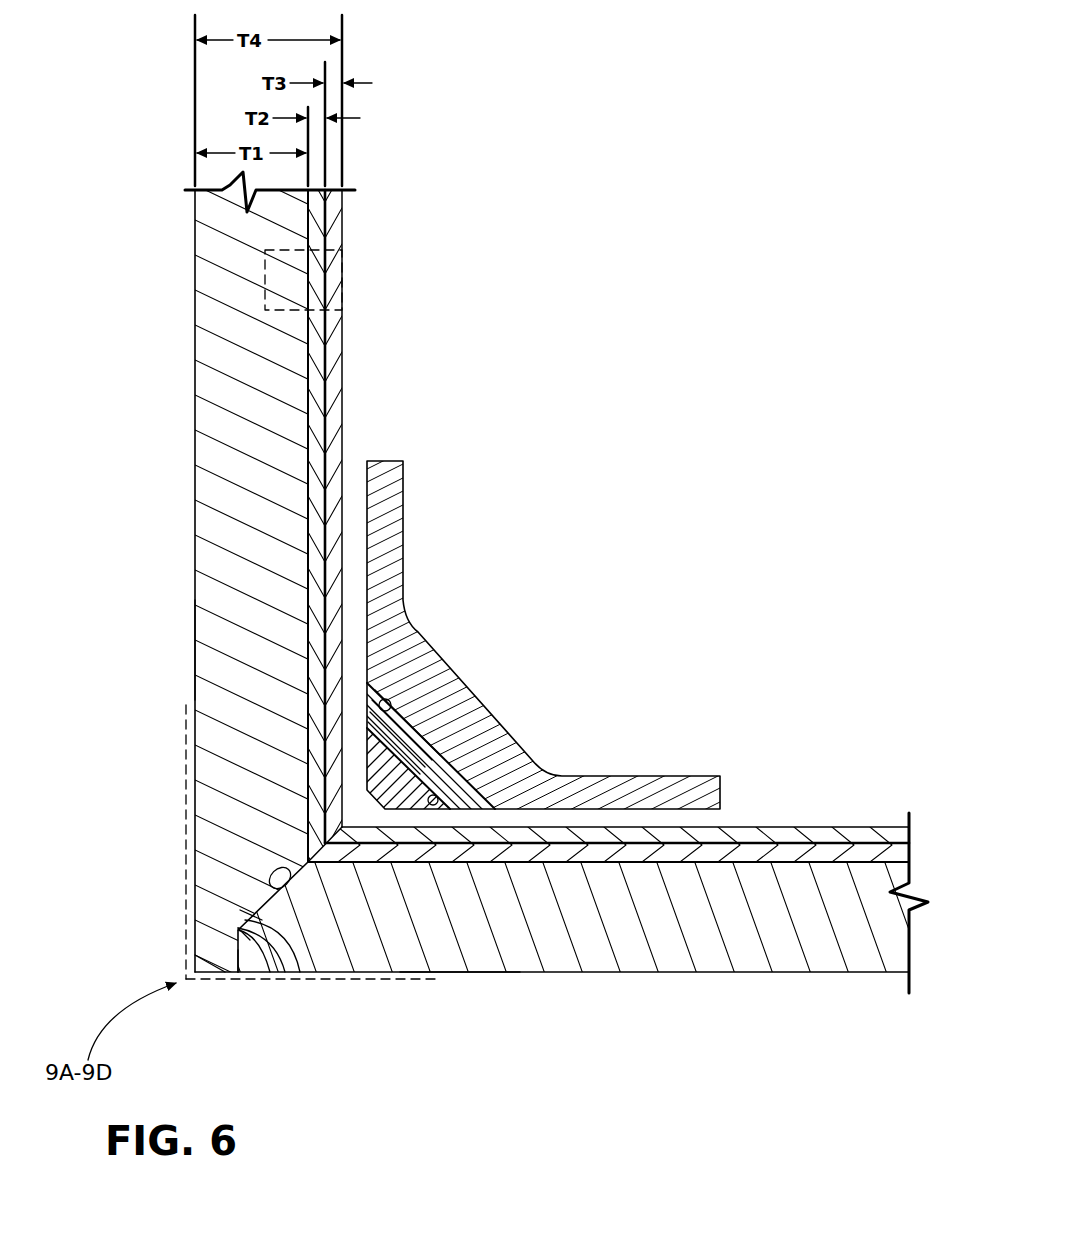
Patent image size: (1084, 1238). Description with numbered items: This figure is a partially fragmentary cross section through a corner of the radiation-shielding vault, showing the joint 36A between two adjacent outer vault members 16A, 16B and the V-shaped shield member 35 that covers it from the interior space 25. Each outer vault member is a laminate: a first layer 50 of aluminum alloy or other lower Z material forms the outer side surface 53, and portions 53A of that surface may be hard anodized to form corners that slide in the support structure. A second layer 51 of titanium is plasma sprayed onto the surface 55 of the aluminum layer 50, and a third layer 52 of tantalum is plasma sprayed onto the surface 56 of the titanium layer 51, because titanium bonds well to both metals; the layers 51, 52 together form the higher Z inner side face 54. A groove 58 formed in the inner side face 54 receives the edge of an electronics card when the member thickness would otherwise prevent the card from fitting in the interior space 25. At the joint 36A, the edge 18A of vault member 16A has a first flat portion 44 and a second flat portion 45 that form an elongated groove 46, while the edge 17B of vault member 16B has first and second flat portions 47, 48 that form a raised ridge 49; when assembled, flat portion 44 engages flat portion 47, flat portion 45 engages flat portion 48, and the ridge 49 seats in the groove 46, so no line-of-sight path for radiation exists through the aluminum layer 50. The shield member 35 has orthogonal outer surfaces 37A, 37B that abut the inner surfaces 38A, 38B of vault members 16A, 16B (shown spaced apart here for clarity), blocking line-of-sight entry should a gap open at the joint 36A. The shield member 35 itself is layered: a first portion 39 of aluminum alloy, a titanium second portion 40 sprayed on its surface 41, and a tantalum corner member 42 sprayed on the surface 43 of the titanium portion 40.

The outer vault member 16A is at (195, 672).
The outer vault member 16B is at (453, 973).
The edge 17B is at (305, 875).
The edge 18A is at (268, 890).
The interior space 25 is at (667, 558).
The shield member 35 is at (460, 668).
The joint 36A is at (236, 976).
The outer surface 37A is at (370, 482).
The outer surface 37B is at (720, 806).
The inner surface 38A is at (343, 378).
The inner surface 38B is at (825, 827).
The first portion 39 is at (440, 735).
The second portion 40 is at (440, 747).
The surface 41 is at (390, 700).
The corner member 42 is at (450, 772).
The surface 43 is at (455, 778).
The first flat portion 44 is at (250, 975).
The second flat portion 45 is at (275, 970).
The elongated groove 46 is at (262, 975).
The first flat portion 47 is at (232, 958).
The second flat portion 48 is at (250, 915).
The raised ridge 49 is at (235, 925).
The first layer 50 is at (862, 937).
The second layer 51 is at (850, 858).
The third layer 52 is at (872, 827).
The outer side surface 53 is at (195, 265).
The anodized portion 53A is at (185, 772).
The inner side face 54 is at (343, 325).
The surface 55 is at (912, 883).
The surface 56 is at (888, 836).
The groove 58 is at (340, 268).